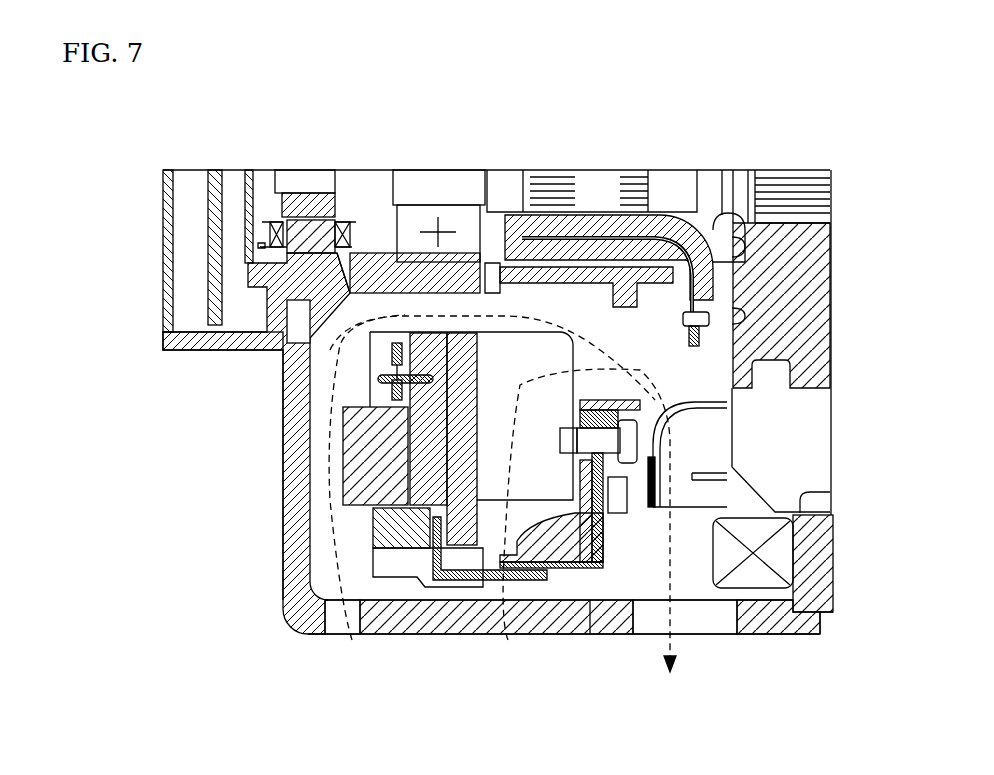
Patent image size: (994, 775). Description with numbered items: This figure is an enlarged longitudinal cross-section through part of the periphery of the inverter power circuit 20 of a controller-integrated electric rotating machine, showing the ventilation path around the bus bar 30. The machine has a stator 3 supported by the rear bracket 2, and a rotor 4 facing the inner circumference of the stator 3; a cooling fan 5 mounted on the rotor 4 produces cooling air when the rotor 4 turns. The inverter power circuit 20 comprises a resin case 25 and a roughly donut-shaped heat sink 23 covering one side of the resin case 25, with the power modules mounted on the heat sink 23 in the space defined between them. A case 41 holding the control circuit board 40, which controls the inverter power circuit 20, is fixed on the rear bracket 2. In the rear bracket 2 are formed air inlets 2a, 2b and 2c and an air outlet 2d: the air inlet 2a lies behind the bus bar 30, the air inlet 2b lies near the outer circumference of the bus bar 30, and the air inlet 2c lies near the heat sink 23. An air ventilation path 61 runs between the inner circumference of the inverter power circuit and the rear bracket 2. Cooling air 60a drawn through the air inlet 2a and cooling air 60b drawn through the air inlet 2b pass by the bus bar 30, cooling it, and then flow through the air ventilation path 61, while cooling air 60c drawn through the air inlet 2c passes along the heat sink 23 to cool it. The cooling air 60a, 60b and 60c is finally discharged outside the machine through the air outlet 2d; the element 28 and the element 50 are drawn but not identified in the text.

The rear bracket 2 is at (300, 590).
The air inlet 2a is at (300, 473).
The air inlet 2b is at (335, 622).
The air inlet 2c is at (550, 620).
The air outlet 2d is at (715, 615).
The stator 3 is at (805, 548).
The rotor 4 is at (780, 306).
The cooling fan 5 is at (705, 443).
The inverter power circuit 20 is at (448, 332).
The heat sink 23 is at (452, 587).
The resin case 25 is at (421, 332).
The holder base 28 is at (385, 600).
The bus bar 30 is at (345, 507).
The control circuit board 40 is at (215, 268).
The case 41 is at (178, 330).
The fan disc 50 is at (613, 615).
The cooling air 60a is at (300, 440).
The cooling air 60b is at (352, 640).
The cooling air 60c is at (508, 640).
The air ventilation path 61 is at (396, 308).